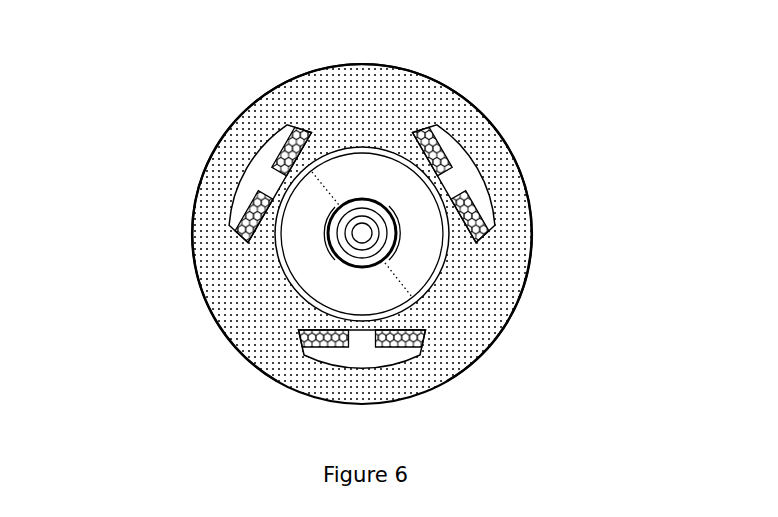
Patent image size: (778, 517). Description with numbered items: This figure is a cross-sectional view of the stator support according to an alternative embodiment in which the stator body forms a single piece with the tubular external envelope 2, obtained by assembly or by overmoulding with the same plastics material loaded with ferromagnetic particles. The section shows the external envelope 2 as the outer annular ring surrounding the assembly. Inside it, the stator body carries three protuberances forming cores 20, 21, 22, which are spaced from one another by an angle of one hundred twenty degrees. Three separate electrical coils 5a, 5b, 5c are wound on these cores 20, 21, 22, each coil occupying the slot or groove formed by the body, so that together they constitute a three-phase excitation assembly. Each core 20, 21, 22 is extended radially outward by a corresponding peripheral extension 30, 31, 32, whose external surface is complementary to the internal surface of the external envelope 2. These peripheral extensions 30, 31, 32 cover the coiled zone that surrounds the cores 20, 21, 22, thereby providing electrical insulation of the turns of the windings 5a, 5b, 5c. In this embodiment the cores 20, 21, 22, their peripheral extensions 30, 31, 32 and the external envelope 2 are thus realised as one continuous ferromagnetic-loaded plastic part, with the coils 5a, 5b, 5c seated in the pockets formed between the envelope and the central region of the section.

The external envelope 2 is at (505, 152).
The electrical coil 5a is at (245, 214).
The electrical coil 5b is at (287, 145).
The electrical coil 5c is at (475, 218).
The core 20 is at (462, 267).
The core 21 is at (268, 273).
The core 22 is at (367, 138).
The peripheral extension 30 is at (482, 315).
The peripheral extension 31 is at (240, 308).
The peripheral extension 32 is at (305, 98).